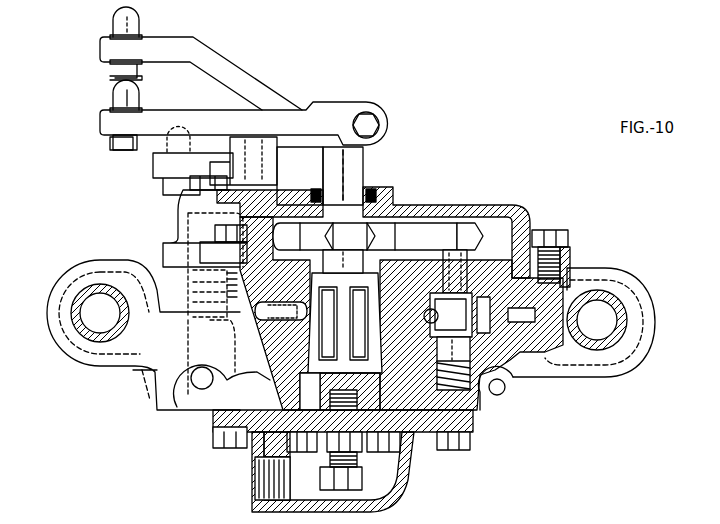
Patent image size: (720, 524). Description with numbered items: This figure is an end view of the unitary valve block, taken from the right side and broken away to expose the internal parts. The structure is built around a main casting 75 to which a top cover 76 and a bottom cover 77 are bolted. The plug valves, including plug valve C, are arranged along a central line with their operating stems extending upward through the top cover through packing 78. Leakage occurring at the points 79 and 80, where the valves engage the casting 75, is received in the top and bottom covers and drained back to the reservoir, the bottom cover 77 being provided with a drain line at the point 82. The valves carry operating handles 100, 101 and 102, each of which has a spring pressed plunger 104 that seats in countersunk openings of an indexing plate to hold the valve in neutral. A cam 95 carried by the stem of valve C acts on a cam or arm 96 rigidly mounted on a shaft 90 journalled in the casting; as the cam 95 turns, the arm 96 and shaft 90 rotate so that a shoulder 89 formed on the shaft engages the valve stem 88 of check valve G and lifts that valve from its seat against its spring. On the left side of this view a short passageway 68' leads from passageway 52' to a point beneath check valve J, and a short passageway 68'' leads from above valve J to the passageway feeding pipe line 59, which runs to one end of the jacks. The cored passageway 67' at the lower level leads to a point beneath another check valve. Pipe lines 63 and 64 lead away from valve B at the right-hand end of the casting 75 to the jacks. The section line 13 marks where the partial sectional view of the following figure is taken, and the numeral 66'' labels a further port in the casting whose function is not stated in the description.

The operating handle 101 is at (259, 92).
The operating handle 102 is at (302, 114).
The operating handle 100 is at (185, 172).
The spring pressed plunger 104 is at (266, 186).
The packing 78 is at (373, 189).
The cam 95 is at (375, 232).
The cam or arm 96 is at (440, 230).
The top cover 76 is at (507, 206).
The shaft 90 is at (490, 257).
The main casting 75 is at (609, 268).
The pipe line 63 is at (620, 336).
The pipe line 64 is at (71, 322).
The check valve J is at (149, 332).
The short passageway 68' is at (168, 352).
The passageway 52' is at (186, 368).
The short passageway 68'' is at (275, 313).
The cored passageway 67' is at (281, 312).
The section line 13— 13 is at (304, 305).
The pipe line 59 is at (270, 343).
The leakage point 79 is at (383, 290).
The leakage point 80 is at (374, 352).
The valve stem 88 is at (430, 325).
The shoulder 89 is at (451, 341).
The port 66'' is at (536, 355).
The plug valve C is at (358, 352).
The drain point 82 is at (254, 488).
The bottom cover 77 is at (402, 483).